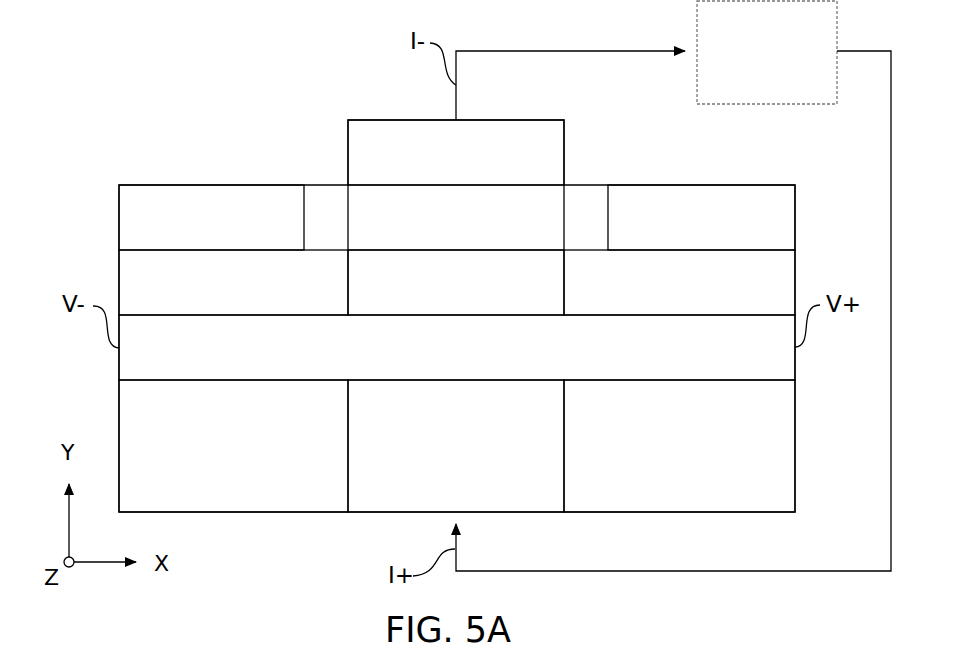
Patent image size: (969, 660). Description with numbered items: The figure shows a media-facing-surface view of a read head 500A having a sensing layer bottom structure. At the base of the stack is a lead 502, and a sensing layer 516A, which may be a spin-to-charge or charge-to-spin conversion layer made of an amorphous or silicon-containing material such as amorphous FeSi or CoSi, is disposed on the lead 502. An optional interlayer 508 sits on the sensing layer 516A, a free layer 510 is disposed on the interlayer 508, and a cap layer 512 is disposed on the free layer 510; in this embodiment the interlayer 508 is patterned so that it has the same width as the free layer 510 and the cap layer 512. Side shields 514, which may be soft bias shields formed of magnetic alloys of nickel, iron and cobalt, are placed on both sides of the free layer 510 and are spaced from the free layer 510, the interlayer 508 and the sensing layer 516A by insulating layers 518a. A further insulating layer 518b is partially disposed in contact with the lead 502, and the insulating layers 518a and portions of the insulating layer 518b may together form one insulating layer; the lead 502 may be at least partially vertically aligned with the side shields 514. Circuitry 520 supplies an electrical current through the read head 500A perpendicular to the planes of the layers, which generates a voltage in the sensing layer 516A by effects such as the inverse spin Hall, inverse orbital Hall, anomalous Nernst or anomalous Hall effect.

The read head 500A is at (136, 46).
The lead 502 is at (435, 458).
The interlayer 508 is at (435, 295).
The free layer 510 is at (435, 230).
The cap layer 512 is at (435, 165).
The side shields 514 is at (191, 230).
The sensing layer 516A is at (426, 361).
The insulating layers 518a is at (205, 295).
The insulating layer 518b is at (205, 458).
The circuitry 520 is at (746, 67).